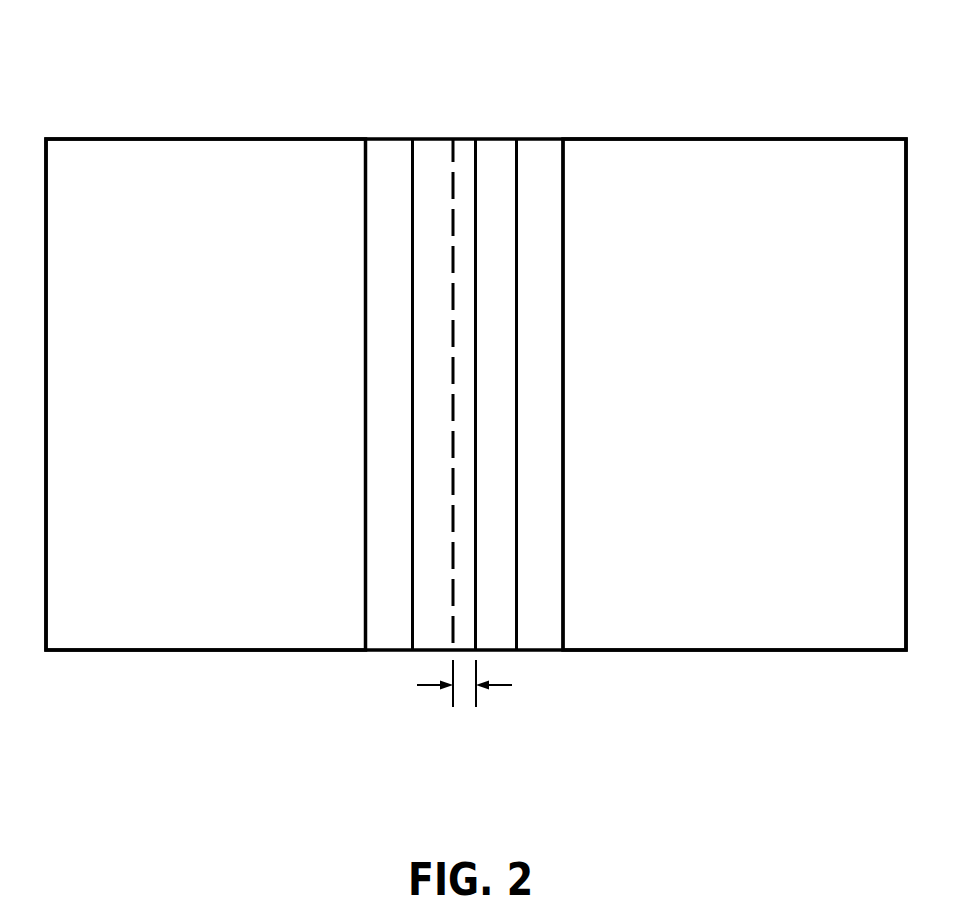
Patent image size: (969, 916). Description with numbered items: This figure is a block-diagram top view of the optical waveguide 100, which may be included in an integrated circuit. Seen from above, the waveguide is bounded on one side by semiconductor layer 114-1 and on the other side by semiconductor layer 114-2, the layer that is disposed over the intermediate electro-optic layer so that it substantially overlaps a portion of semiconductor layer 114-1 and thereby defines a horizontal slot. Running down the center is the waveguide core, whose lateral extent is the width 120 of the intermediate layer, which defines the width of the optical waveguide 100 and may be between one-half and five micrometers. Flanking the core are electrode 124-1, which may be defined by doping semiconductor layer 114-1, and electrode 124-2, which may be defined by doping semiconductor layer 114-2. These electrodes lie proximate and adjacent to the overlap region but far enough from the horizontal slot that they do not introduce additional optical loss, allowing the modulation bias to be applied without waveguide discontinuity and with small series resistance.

The optical waveguide 100 is at (477, 122).
The semiconductor layer 114-1 is at (895, 437).
The semiconductor layer 114-2 is at (121, 437).
The electrode 124-1 is at (533, 555).
The electrode 124-2 is at (390, 555).
The width 120 is at (465, 707).